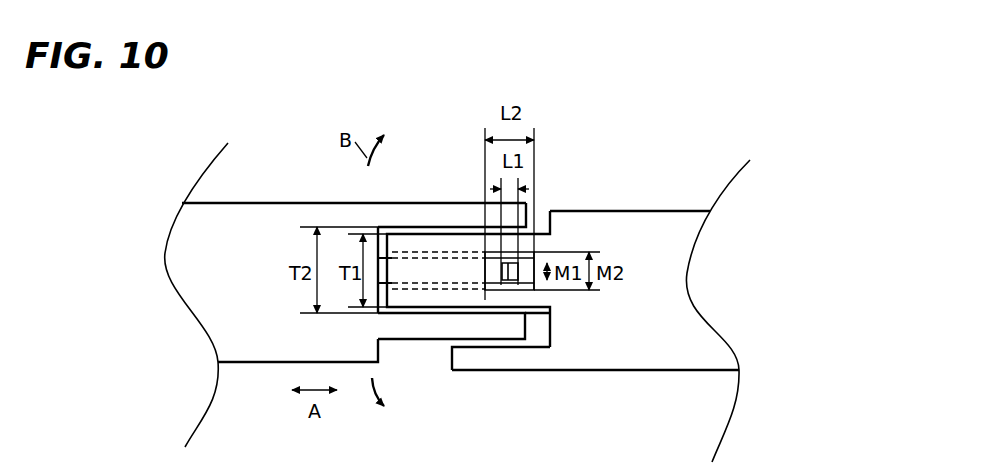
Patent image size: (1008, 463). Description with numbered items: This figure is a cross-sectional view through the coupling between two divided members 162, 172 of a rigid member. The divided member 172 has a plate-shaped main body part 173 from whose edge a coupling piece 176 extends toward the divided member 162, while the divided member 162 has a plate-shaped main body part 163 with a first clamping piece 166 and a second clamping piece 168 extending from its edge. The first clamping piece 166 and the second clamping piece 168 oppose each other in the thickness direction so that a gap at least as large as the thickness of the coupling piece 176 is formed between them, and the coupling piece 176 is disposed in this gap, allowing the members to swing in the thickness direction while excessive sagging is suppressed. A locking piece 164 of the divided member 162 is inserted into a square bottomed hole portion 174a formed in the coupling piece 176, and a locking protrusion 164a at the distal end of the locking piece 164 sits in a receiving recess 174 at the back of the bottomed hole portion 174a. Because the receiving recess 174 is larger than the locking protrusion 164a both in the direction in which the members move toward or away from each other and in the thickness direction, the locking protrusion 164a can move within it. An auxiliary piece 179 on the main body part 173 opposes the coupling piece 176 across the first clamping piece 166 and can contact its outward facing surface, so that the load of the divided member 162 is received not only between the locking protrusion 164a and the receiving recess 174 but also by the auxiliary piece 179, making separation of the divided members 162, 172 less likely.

The divided member 162 is at (164, 208).
The main body part 163 is at (278, 203).
The locking piece 164 is at (497, 283).
The locking protrusion 164a is at (520, 268).
The first clamping piece 166 is at (420, 340).
The second clamping piece 168 is at (456, 203).
The divided member 172 is at (736, 317).
The main body part 173 is at (681, 211).
The receiving recess 174 is at (523, 256).
The bottomed hole portion 174a is at (413, 252).
The coupling piece 176 is at (436, 234).
The auxiliary piece 179 is at (495, 370).